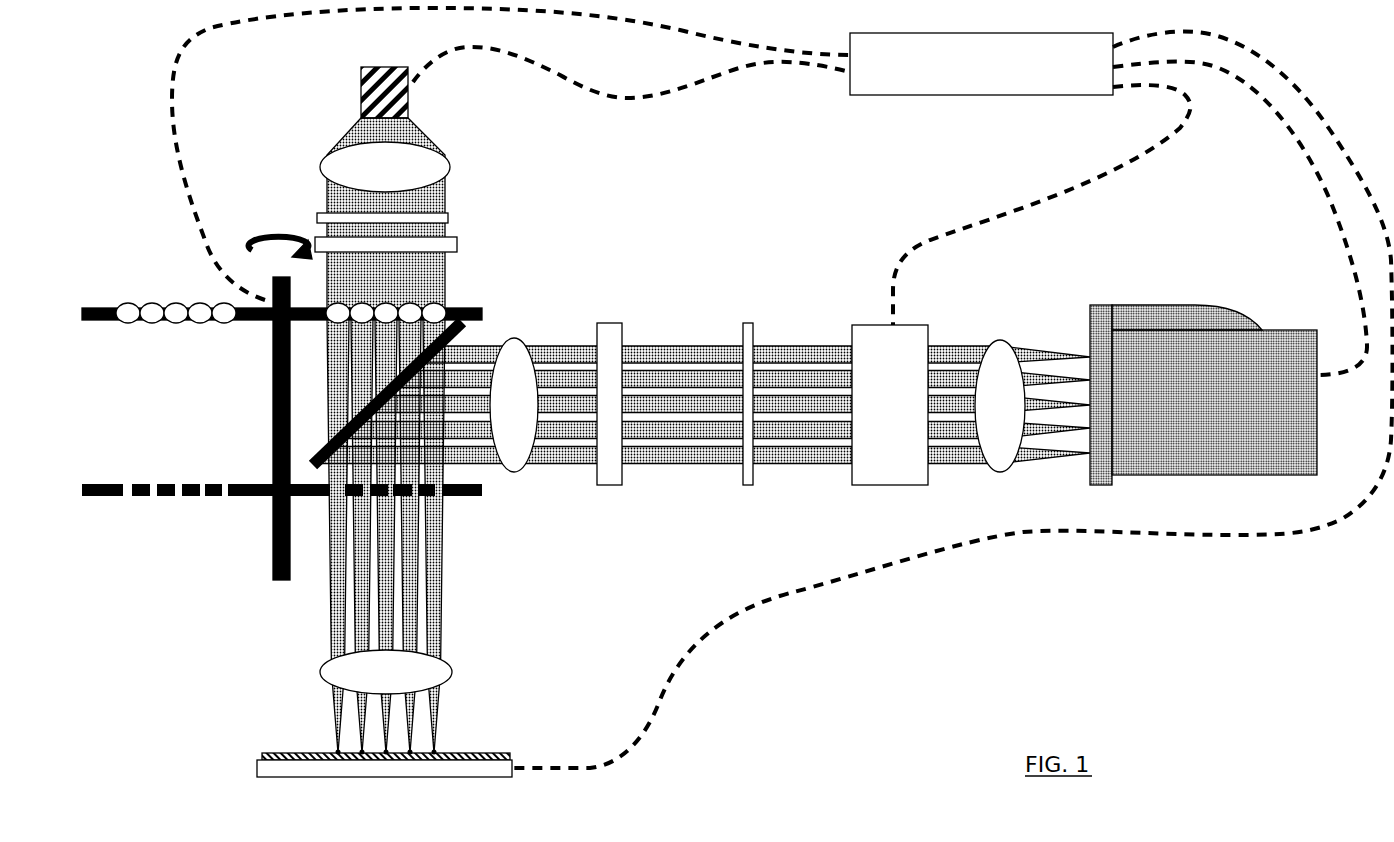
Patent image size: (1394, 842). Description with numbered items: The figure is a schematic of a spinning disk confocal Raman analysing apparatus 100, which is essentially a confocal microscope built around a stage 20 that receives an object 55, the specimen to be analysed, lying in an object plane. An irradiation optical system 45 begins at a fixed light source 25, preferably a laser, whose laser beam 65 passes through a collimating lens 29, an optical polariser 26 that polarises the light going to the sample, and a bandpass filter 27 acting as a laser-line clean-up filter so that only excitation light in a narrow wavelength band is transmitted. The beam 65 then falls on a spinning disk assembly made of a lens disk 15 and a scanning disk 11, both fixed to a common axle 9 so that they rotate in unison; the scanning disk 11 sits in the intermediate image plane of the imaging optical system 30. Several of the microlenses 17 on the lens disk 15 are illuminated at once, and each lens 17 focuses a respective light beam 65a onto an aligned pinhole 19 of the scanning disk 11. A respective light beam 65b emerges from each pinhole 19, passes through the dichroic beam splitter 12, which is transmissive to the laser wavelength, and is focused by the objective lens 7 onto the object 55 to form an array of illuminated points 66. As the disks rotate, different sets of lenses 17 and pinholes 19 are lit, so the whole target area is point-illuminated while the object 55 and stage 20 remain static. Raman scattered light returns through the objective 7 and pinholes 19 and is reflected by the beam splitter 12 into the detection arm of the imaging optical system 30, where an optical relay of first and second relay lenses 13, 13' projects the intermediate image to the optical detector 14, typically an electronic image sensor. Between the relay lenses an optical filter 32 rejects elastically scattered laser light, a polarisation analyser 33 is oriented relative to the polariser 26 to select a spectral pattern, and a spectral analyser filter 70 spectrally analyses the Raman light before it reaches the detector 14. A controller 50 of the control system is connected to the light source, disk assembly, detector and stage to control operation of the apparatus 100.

The objective lens 7 is at (322, 676).
The common axle 9 is at (268, 548).
The scanning disk 11 is at (103, 478).
The beam splitter 12 is at (314, 443).
The first relay lens 13 is at (576, 438).
The second relay lens 13' is at (1008, 364).
The optical detector 14 is at (1125, 308).
The lens disk 15 is at (100, 324).
The lenses 17 is at (128, 305).
The pinholes 19 is at (200, 486).
The stage 20 is at (258, 770).
The light source 25 is at (412, 88).
The optical polariser 26 is at (448, 218).
The bandpass filter 27 is at (460, 246).
The collimating lens 29 is at (440, 152).
The imaging optical system 30 is at (478, 590).
The optical filter 32 is at (627, 337).
The polarisation analyser 33 is at (750, 335).
The irradiation optical system 45 is at (312, 180).
The controller 50 is at (973, 95).
The object 55 is at (272, 748).
The laser beam 65 is at (436, 188).
The light beam 65a is at (324, 359).
The light beam 65b is at (440, 622).
The points 66 is at (337, 750).
The spectral analyser filter 70 is at (873, 325).
The Raman analysing apparatus 100 is at (928, 633).